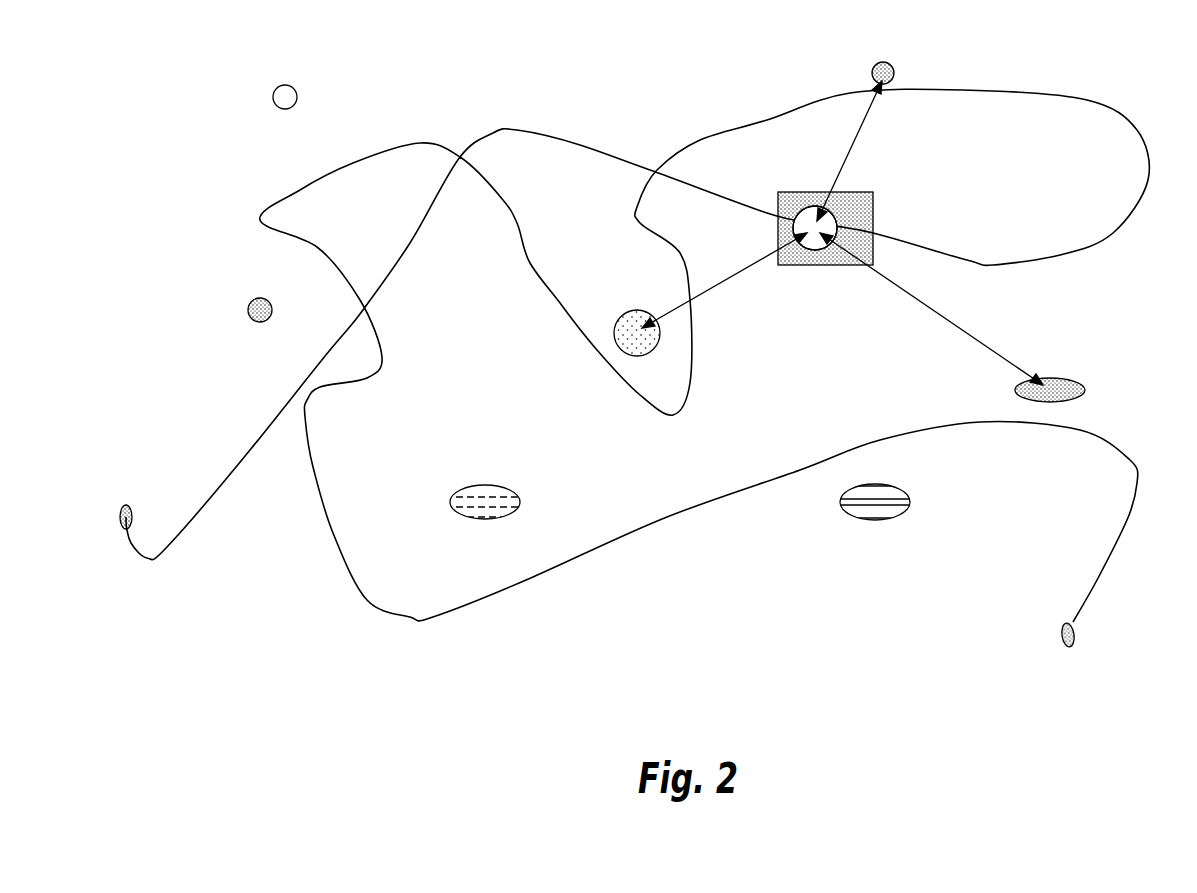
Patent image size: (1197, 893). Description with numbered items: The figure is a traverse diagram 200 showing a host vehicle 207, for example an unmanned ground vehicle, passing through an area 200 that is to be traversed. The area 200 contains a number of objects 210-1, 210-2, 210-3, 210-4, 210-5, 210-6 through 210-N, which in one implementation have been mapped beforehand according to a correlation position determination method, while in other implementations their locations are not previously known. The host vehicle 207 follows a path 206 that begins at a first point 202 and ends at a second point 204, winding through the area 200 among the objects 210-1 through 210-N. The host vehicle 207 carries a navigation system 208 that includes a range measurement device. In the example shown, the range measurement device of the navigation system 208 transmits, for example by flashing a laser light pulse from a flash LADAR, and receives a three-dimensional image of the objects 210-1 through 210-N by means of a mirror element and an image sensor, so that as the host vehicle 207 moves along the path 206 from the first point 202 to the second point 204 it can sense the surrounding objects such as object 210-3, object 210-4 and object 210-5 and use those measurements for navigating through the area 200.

The traverse diagram 200 is at (1062, 60).
The first point 202 is at (133, 511).
The second point 204 is at (1076, 633).
The path 206 is at (353, 162).
The host vehicle 207 is at (865, 205).
The navigation system 208 is at (793, 227).
The object 210-1 is at (258, 298).
The object 210-2 is at (284, 85).
The object 210-3 is at (638, 312).
The object 210-4 is at (890, 62).
The object 210-5 is at (1080, 386).
The object 210-6 is at (893, 508).
The object 210-N is at (483, 493).